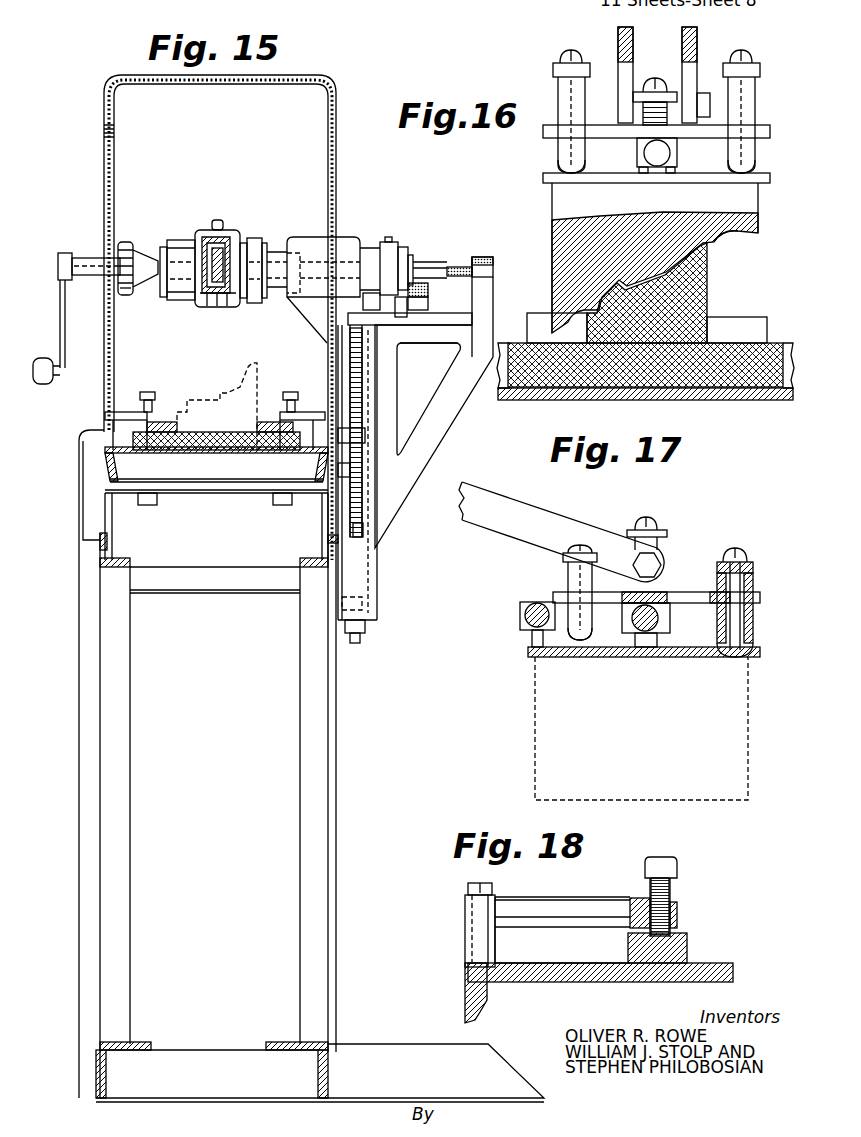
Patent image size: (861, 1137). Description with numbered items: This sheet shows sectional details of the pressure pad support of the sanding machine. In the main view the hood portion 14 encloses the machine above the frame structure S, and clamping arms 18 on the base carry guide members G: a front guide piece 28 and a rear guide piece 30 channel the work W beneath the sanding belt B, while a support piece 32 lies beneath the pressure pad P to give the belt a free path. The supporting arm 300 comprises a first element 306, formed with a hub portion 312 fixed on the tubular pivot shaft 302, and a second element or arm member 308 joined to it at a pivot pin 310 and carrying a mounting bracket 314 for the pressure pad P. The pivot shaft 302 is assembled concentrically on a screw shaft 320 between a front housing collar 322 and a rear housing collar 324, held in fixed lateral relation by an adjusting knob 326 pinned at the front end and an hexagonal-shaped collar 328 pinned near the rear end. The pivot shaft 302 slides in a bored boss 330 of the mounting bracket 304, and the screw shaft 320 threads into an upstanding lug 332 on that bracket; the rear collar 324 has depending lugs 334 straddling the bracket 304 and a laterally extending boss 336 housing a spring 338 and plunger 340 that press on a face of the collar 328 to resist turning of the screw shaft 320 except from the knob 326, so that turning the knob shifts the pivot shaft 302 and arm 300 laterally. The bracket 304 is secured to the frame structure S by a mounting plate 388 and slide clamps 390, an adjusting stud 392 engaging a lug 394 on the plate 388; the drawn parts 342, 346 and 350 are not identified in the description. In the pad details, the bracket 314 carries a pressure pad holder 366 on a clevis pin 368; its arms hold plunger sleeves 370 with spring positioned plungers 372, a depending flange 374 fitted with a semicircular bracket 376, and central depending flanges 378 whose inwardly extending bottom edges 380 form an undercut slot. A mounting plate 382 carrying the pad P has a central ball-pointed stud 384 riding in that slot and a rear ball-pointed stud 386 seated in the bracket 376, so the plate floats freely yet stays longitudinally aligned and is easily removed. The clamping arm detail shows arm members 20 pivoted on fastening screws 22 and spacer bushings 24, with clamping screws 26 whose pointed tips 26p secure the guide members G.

In FIG. 15, the hood portion 14 is at (104, 82).
In FIG. 15, the crank shaft 342 is at (88, 257).
In FIG. 15, the crank handle 346 is at (58, 336).
In FIG. 15, the front housing collar 322 is at (133, 252).
In FIG. 15, the adjusting knob 326 is at (125, 292).
In FIG. 15, the first element 306 is at (182, 240).
In FIG. 15, the supporting arm 300 is at (197, 226).
In FIG. 15, the pivot pin 310 is at (218, 220).
In FIG. 15, the second element 308 is at (213, 307).
In FIG. 15, the hub portion 312 is at (246, 238).
In FIG. 15, the tubular pivot shaft 302 is at (277, 250).
In FIG. 15, the bored boss 330 is at (340, 237).
In FIG. 15, the feed block 350 is at (387, 242).
In FIG. 15, the rear housing collar 324 is at (406, 247).
In FIG. 15, the hexagonal-shaped collar 328 is at (437, 251).
In FIG. 15, the screw shaft 320 is at (458, 266).
In FIG. 15, the upstanding lug 332 is at (485, 257).
In FIG. 15, the laterally extending boss 336 is at (428, 290).
In FIG. 15, the spring 338 is at (428, 303).
In FIG. 15, the plunger 340 is at (420, 322).
In FIG. 15, the mounting bracket 304 is at (447, 429).
In FIG. 15, the depending lugs 334 is at (403, 327).
In FIG. 15, the adjusting stud 392 is at (358, 394).
In FIG. 15, the lug 394 is at (343, 512).
In FIG. 15, the slide clamps 390 is at (355, 540).
In FIG. 15, the mounting plate 388 is at (333, 542).
In FIG. 15, the clamping arms 18 is at (132, 412).
In FIG. 18, the clamping arms 18 is at (454, 909).
In FIG. 15, the front guide piece 28 is at (162, 420).
In FIG. 16, the front guide piece 28 is at (532, 315).
In FIG. 15, the rear guide piece 30 is at (273, 422).
In FIG. 16, the rear guide piece 30 is at (740, 318).
In FIG. 15, the work W is at (218, 393).
In FIG. 16, the work W is at (708, 270).
In FIG. 15, the support piece 32 is at (222, 453).
In FIG. 16, the support piece 32 is at (633, 388).
In FIG. 15, the frame structure S is at (80, 622).
In FIG. 16, the frame structure S is at (753, 400).
In FIG. 18, the frame structure S is at (462, 997).
In FIG. 16, the mounting bracket 314 is at (698, 44).
In FIG. 17, the mounting bracket 314 is at (535, 508).
In FIG. 16, the plunger sleeves 370 is at (557, 90).
In FIG. 17, the plunger sleeves 370 is at (567, 580).
In FIG. 16, the pressure pad holder 366 is at (790, 121).
In FIG. 17, the pressure pad holder 366 is at (688, 592).
In FIG. 16, the clevis pin 368 is at (680, 100).
In FIG. 17, the clevis pin 368 is at (661, 556).
In FIG. 16, the depending flanges 378 is at (678, 153).
In FIG. 17, the depending flanges 378 is at (670, 617).
In FIG. 16, the ball-pointed stud 384 is at (645, 152).
In FIG. 17, the ball-pointed stud 384 is at (647, 634).
In FIG. 16, the spring positioned plungers 372 is at (560, 167).
In FIG. 17, the spring positioned plungers 372 is at (748, 637).
In FIG. 16, the inwardly extending bottom edges 380 is at (642, 173).
In FIG. 17, the inwardly extending bottom edges 380 is at (668, 646).
In FIG. 16, the pressure pad P is at (759, 200).
In FIG. 17, the pressure pad P is at (535, 697).
In FIG. 16, the sanding belt B is at (720, 232).
In FIG. 17, the semicircular bracket 376 is at (520, 618).
In FIG. 17, the ball-pointed stud 386 is at (525, 605).
In FIG. 17, the mounting plate 382 is at (530, 646).
In FIG. 17, the depending flange 374 is at (567, 658).
In FIG. 18, the fastening screws 22 is at (482, 884).
In FIG. 18, the spacer bushings 24 is at (472, 950).
In FIG. 18, the arm members 20 is at (560, 905).
In FIG. 18, the clamping screws 26 is at (677, 867).
In FIG. 18, the pointed tip 26p is at (673, 932).
In FIG. 18, the guide members G is at (688, 947).